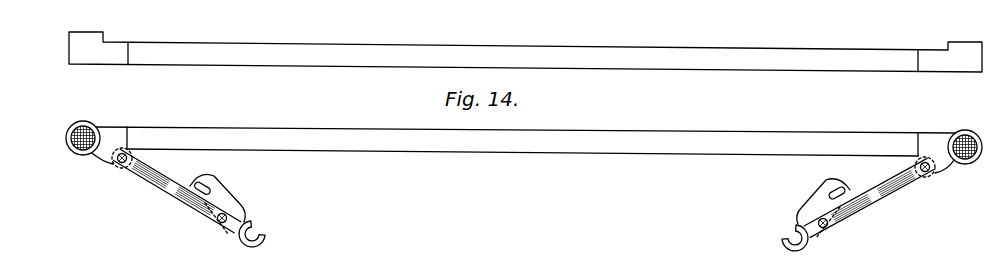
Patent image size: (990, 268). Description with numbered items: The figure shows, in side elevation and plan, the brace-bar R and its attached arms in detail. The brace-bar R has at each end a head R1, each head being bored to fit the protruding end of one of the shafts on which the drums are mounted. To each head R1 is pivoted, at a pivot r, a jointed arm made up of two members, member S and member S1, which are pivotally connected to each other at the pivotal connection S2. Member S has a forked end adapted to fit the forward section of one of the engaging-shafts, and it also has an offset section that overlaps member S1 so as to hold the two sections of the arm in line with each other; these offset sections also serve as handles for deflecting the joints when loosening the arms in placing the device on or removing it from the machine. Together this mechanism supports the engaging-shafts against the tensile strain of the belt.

The brace-bar R is at (525, 94).
The head R1 is at (524, 107).
The pivot r is at (116, 165).
The arm member S1 is at (157, 187).
The pivotal connection S2 is at (219, 228).
The arm member S is at (254, 229).